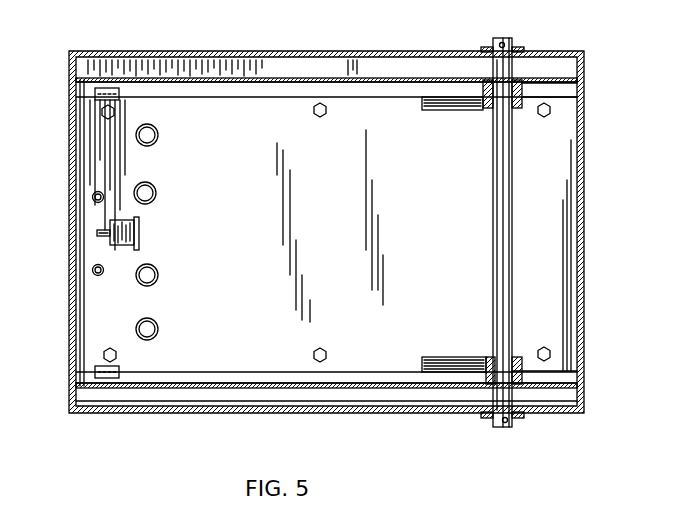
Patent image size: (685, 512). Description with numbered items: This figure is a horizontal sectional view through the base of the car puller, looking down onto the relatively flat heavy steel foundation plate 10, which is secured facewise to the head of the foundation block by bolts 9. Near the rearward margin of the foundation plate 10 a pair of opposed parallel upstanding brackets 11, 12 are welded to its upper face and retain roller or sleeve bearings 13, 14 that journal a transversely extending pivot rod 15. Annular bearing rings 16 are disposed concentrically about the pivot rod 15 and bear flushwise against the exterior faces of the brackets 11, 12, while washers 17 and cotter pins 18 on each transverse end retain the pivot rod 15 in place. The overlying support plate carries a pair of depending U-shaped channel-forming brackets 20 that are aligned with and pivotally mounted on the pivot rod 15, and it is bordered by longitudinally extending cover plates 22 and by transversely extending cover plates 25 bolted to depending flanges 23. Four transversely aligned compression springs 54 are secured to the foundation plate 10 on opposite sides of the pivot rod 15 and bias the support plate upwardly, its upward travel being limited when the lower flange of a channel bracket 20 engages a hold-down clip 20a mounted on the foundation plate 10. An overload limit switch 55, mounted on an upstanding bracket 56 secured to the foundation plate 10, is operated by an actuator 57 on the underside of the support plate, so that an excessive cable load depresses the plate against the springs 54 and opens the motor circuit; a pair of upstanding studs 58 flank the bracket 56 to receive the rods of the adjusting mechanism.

The bolts 9 is at (314, 110).
The foundation plate 10 is at (567, 289).
The upstanding bracket 11 is at (422, 104).
The upstanding bracket 12 is at (468, 357).
The roller or sleeve bearing 13 is at (492, 357).
The roller or sleeve bearing 14 is at (491, 109).
The pivot rod 15 is at (496, 260).
The annular bearing rings 16 is at (524, 80).
The washers 17 is at (486, 47).
The cotter pins 18 is at (505, 43).
The channel-forming brackets 20 is at (261, 52).
The hold-down clips 20a is at (111, 88).
The cover plates 22 is at (340, 53).
The depending flanges 23 is at (82, 138).
The cover plates 25 is at (69, 115).
The compression springs 54 is at (154, 130).
The overload limit switch 55 is at (124, 232).
The upstanding bracket 56 is at (139, 246).
The actuator 57 is at (97, 233).
The upstanding studs 58 is at (92, 198).